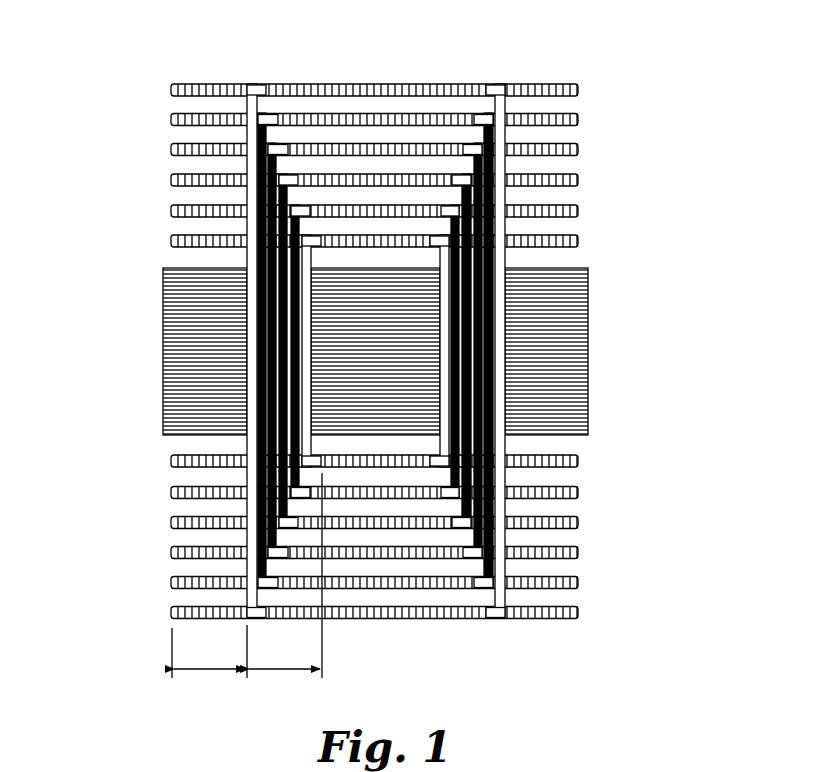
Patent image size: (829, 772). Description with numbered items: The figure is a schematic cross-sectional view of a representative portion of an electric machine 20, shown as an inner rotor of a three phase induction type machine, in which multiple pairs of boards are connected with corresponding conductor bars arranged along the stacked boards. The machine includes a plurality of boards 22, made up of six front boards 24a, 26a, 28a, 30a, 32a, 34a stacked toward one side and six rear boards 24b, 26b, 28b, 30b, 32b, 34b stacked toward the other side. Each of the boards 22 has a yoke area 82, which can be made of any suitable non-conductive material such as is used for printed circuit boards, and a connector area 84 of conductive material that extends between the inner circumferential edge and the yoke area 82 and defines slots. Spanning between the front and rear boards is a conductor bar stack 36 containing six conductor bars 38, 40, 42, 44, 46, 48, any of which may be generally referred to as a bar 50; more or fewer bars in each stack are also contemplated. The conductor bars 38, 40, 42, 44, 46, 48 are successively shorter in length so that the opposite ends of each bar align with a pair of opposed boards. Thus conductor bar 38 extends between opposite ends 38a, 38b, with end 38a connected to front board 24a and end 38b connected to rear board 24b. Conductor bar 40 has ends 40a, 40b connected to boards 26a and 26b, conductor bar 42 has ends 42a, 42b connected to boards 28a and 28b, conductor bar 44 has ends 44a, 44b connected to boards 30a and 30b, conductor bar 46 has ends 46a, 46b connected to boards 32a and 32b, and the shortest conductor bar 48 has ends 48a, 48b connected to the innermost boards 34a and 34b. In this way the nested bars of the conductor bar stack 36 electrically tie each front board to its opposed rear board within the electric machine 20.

The electric machine 20 is at (393, 375).
The boards 22 is at (584, 520).
The front board 24a is at (171, 90).
The front board 26a is at (171, 120).
The front board 28a is at (171, 150).
The front board 30a is at (171, 180).
The front board 32a is at (171, 211).
The front board 34a is at (171, 241).
The rear board 24b is at (171, 612).
The rear board 26b is at (171, 582).
The rear board 28b is at (171, 552).
The rear board 30b is at (171, 522).
The rear board 32b is at (171, 492).
The rear board 34b is at (171, 461).
The conductor bar stack 36 is at (541, 75).
The bar 50 is at (508, 102).
The conductor bar 38 is at (243, 84).
The conductor bar 40 is at (270, 130).
The conductor bar 42 is at (278, 168).
The conductor bar 44 is at (290, 516).
The conductor bar 46 is at (300, 482).
The conductor bar 48 is at (315, 442).
The end 38a is at (494, 84).
The end 40a is at (477, 120).
The end 42a is at (437, 150).
The end 44a is at (468, 170).
The end 46a is at (460, 199).
The end 48a is at (447, 233).
The end 38b is at (496, 618).
The end 40b is at (488, 588).
The end 42b is at (472, 555).
The end 44b is at (458, 522).
The end 46b is at (450, 492).
The end 48b is at (442, 458).
The yoke area 82 is at (195, 668).
The connector area 84 is at (285, 670).